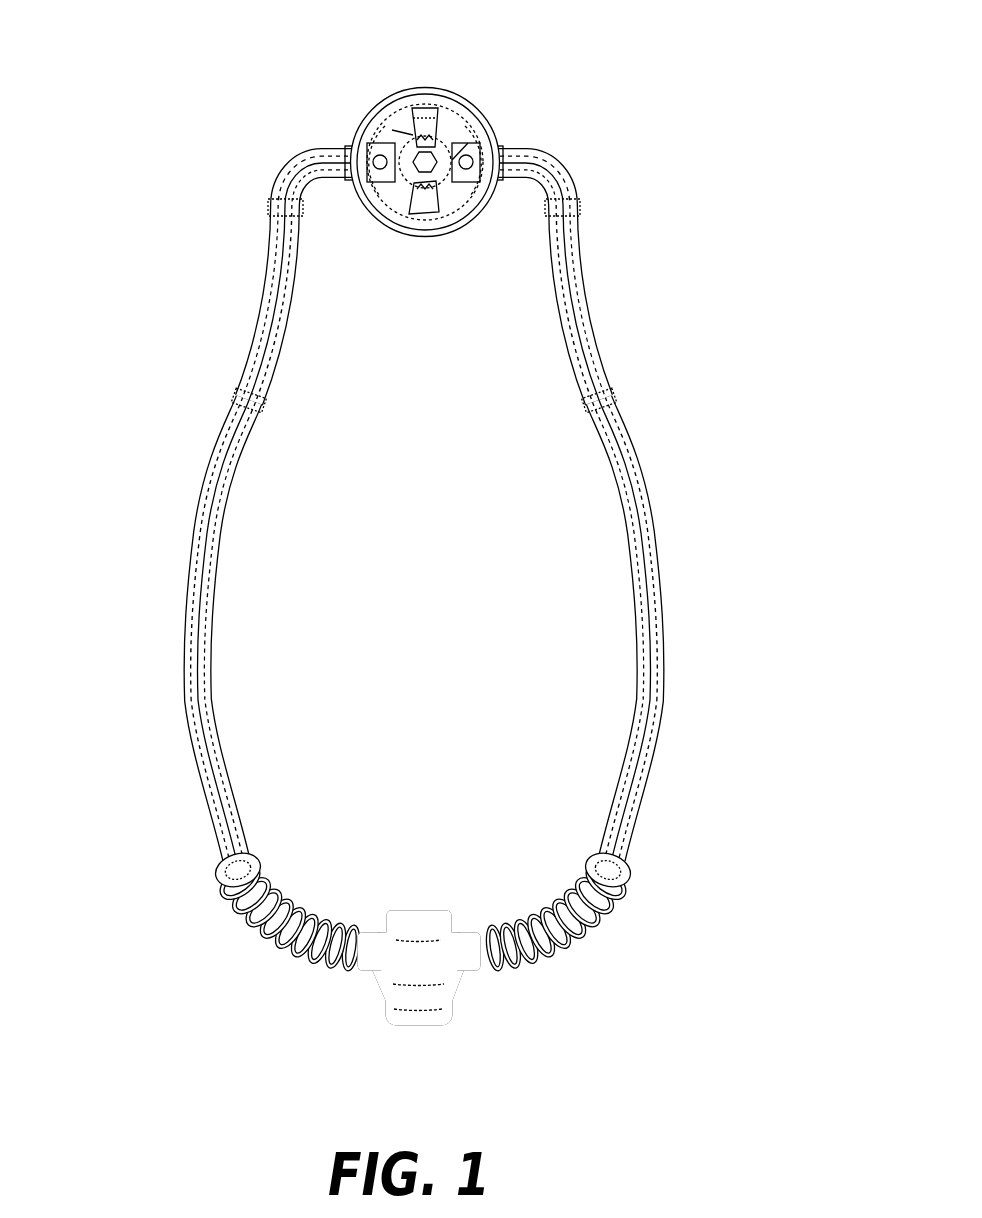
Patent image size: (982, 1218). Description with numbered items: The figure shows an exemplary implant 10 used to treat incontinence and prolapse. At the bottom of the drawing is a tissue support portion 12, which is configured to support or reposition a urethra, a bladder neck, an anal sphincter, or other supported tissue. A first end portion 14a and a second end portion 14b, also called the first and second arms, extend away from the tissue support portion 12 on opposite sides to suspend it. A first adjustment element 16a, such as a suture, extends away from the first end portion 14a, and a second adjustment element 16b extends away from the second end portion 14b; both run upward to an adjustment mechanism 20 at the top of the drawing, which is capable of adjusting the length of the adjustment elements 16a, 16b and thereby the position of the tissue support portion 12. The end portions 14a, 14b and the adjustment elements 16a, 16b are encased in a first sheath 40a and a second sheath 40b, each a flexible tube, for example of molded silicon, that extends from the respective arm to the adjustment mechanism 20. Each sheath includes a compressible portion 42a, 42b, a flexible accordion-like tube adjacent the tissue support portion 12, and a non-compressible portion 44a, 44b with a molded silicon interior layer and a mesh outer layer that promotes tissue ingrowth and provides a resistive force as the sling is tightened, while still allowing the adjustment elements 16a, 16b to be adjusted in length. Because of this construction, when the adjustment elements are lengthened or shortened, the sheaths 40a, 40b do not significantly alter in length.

The implant 10 is at (436, 553).
The tissue support portion 12 is at (430, 1007).
The first end portion 14a is at (475, 970).
The second end portion 14b is at (364, 968).
The first adjustment element 16a is at (639, 534).
The second adjustment element 16b is at (205, 537).
The adjustment mechanism 20 is at (466, 118).
The first sheath 40a is at (622, 422).
The second sheath 40b is at (222, 432).
The first compressible portion 42a is at (625, 874).
The second compressible portion 42b is at (220, 877).
The first non-compressible portion 44a is at (572, 294).
The second non-compressible portion 44b is at (269, 298).